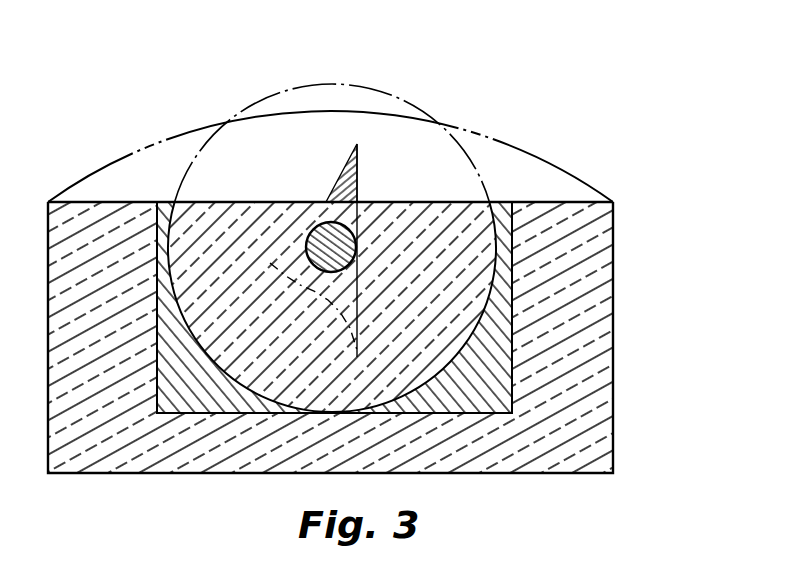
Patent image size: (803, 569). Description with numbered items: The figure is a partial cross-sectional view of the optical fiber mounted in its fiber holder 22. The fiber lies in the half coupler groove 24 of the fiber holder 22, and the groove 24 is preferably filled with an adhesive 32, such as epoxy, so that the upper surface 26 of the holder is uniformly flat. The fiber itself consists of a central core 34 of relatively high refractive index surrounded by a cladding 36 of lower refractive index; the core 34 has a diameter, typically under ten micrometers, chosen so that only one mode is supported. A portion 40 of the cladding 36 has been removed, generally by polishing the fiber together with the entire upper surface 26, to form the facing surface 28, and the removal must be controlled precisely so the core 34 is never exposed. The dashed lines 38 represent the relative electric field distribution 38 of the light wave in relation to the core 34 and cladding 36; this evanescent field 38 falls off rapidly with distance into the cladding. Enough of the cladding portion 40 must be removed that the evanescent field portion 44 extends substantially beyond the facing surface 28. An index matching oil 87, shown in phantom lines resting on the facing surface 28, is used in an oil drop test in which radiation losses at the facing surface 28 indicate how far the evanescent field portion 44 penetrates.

The fiber holder 22 is at (600, 351).
The half coupler groove 24 is at (458, 406).
The upper surface 26 is at (100, 201).
The facing surface 28 is at (432, 202).
The adhesive 32 is at (165, 201).
The core 34 is at (324, 222).
The cladding 36 is at (232, 208).
The electric field distribution 38 is at (268, 262).
The cladding portion 40 is at (368, 84).
The evanescent field portion 44 is at (357, 177).
The index matching oil 87 is at (547, 162).